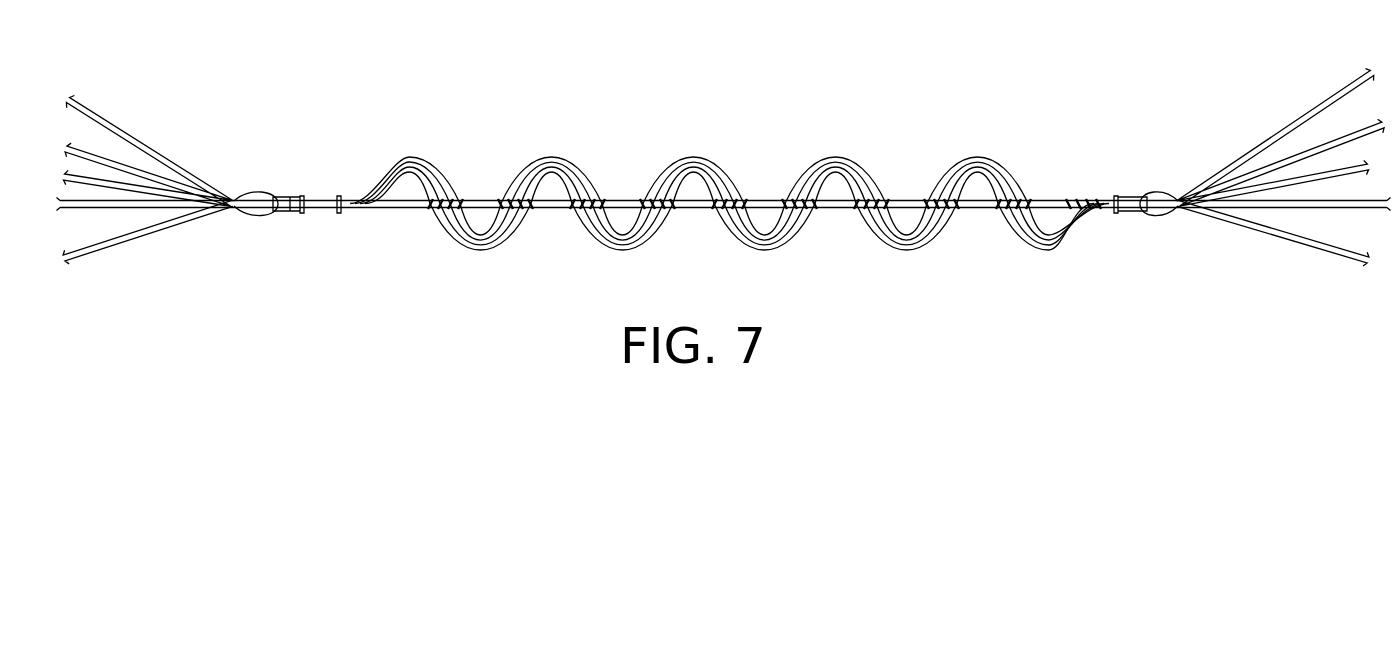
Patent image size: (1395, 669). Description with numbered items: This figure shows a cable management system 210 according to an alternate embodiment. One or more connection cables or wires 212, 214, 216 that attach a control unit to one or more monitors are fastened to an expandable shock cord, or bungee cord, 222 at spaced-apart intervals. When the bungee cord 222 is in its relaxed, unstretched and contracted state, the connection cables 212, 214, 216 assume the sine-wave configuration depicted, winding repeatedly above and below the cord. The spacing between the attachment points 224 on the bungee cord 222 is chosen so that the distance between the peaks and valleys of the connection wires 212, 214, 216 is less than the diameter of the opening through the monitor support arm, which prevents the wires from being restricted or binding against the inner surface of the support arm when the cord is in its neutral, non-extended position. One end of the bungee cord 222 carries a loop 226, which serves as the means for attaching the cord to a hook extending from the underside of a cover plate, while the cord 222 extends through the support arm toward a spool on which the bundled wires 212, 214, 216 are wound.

The cable management system 210 is at (724, 167).
The connection cable 212 is at (587, 167).
The connection cable 214 is at (678, 163).
The connection cable 216 is at (798, 163).
The shock cord 222 is at (1053, 197).
The attachment points 224 is at (427, 208).
The loop 226 is at (1170, 212).